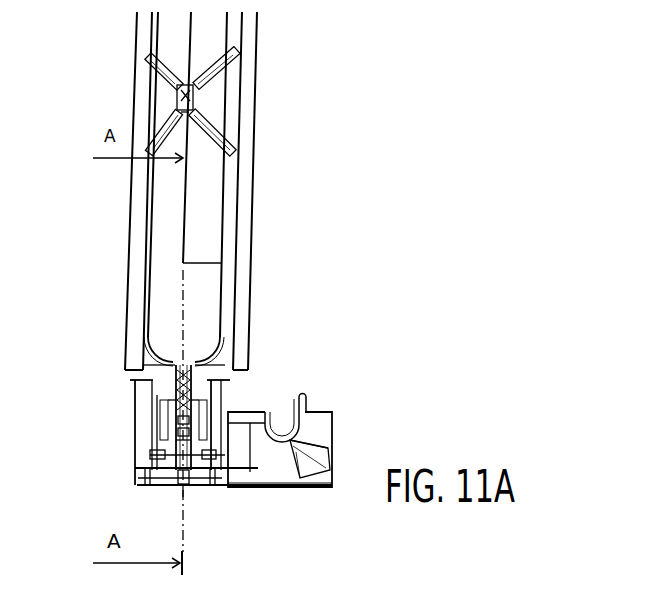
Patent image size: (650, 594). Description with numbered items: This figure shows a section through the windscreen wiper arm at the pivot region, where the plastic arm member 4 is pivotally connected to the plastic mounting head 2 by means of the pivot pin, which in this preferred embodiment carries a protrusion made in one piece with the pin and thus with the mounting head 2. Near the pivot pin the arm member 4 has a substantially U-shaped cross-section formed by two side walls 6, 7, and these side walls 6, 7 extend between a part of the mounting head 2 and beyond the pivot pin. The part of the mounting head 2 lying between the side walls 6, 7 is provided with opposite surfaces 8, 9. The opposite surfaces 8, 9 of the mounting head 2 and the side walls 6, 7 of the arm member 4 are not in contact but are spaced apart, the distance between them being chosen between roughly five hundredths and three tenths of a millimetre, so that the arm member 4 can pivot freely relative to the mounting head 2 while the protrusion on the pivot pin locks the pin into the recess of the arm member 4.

The arm member 4 is at (245, 174).
The mounting head 2 is at (330, 422).
The side wall 6 is at (176, 406).
The side wall 7 is at (203, 420).
The opposite surface 8 is at (140, 449).
The opposite surface 9 is at (226, 431).